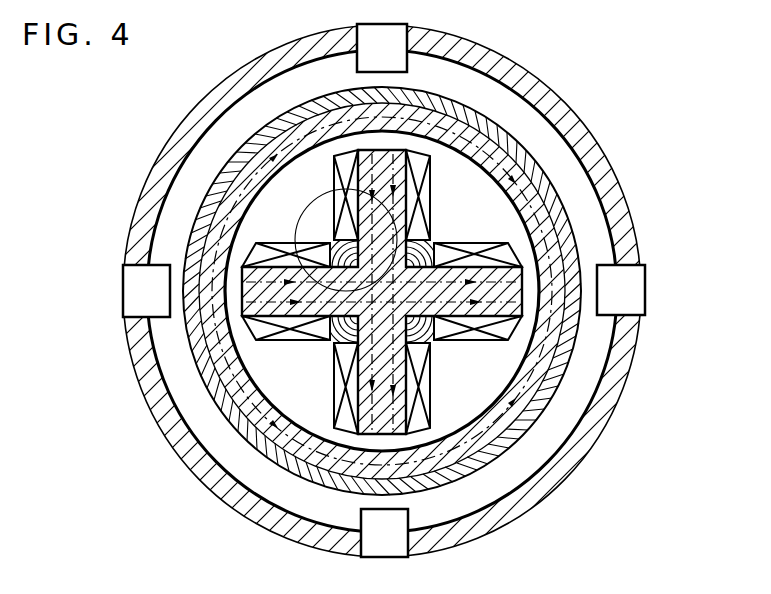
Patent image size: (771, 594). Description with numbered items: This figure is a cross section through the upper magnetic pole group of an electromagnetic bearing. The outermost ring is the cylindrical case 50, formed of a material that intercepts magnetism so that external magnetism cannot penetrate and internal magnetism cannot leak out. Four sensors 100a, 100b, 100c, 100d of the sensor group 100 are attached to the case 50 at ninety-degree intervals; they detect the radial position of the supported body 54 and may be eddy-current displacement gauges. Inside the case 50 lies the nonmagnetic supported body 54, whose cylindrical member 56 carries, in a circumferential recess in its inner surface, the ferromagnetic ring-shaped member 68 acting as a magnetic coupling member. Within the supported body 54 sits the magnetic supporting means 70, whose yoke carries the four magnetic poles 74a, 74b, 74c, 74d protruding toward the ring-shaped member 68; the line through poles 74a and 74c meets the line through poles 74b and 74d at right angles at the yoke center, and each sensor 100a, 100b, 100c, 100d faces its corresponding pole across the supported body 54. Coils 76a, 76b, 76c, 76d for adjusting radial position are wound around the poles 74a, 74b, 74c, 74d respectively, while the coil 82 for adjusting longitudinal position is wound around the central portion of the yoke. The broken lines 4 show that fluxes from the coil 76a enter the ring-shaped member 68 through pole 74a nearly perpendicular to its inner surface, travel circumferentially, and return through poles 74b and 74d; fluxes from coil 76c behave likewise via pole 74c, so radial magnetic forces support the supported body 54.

The broken lines 4 is at (313, 206).
The cylindrical case 50 is at (532, 97).
The supported body 54 is at (538, 441).
The cylindrical member 56 is at (522, 478).
The ring-shaped member 68 is at (552, 468).
The magnetic supporting means 70 is at (300, 393).
The magnetic pole 74a is at (250, 336).
The magnetic pole 74b is at (430, 420).
The magnetic pole 74c is at (526, 264).
The magnetic pole 74d is at (429, 173).
The coil 76a is at (290, 333).
The coil 76b is at (432, 386).
The coil 76c is at (466, 342).
The coil 76d is at (340, 197).
The coil 82 is at (442, 232).
The sensor group 100 is at (385, 297).
The sensor 100a is at (136, 282).
The sensor 100b is at (397, 542).
The sensor 100c is at (640, 297).
The sensor 100d is at (398, 44).